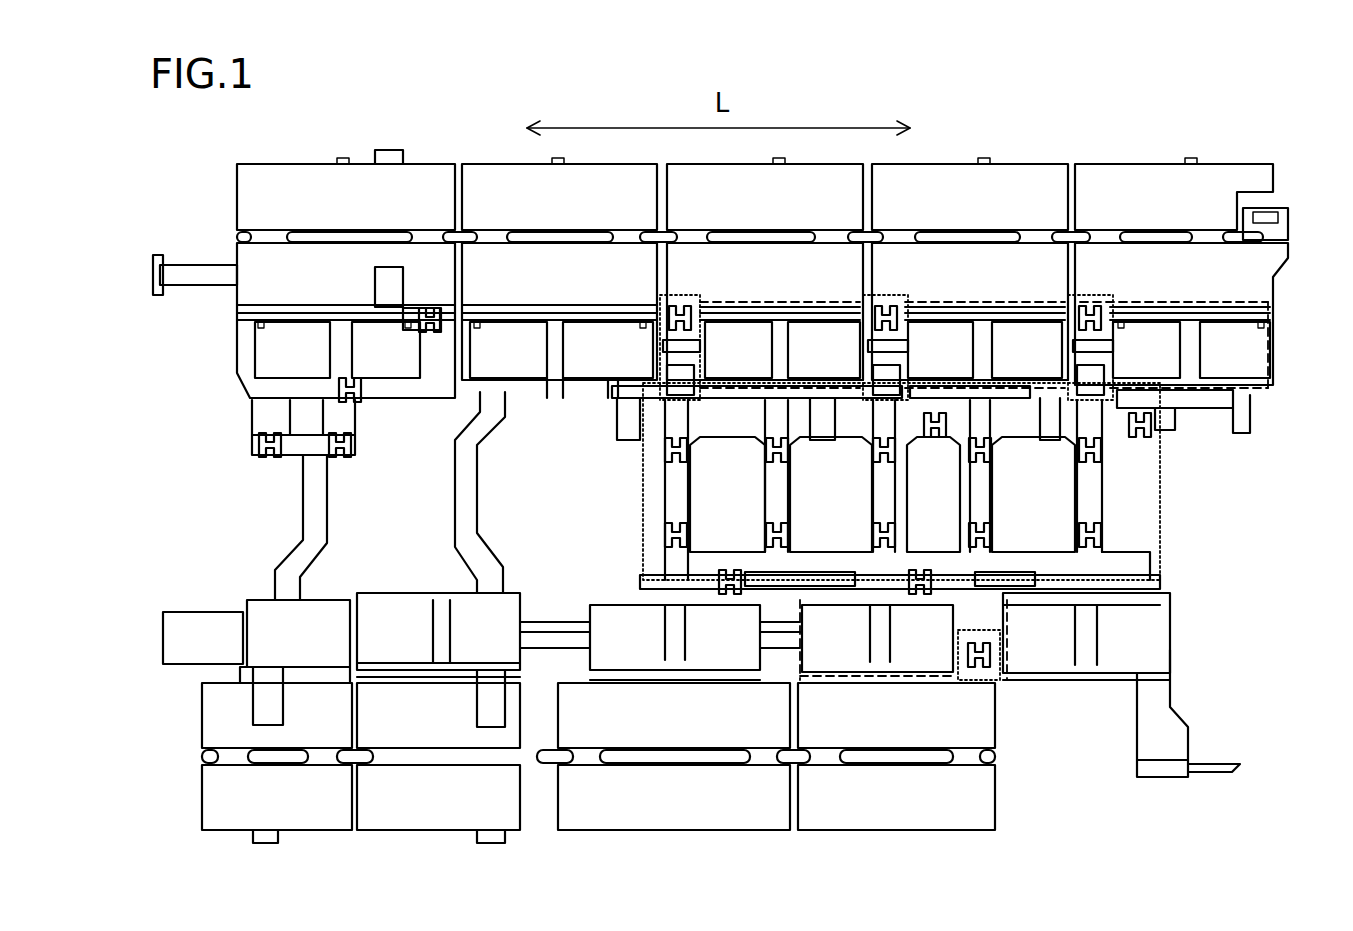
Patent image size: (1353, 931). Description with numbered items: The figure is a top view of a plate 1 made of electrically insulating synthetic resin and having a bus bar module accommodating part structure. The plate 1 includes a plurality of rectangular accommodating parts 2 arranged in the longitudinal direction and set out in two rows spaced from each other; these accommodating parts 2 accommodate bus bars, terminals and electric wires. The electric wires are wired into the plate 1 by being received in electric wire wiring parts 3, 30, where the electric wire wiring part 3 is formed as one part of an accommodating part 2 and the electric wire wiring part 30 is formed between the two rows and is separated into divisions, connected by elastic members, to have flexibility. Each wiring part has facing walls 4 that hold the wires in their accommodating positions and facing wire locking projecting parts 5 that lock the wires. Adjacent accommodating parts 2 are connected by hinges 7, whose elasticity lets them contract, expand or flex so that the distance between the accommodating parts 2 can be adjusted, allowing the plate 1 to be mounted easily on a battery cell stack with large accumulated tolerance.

The plate 1 is at (1146, 126).
The accommodating part 2 is at (763, 300).
The electric wire wiring part 3 is at (687, 295).
The wall 4 is at (660, 307).
The wire locking projecting part 5 is at (868, 307).
The hinge 7 is at (672, 350).
The electric wire wiring part 30 is at (1162, 490).